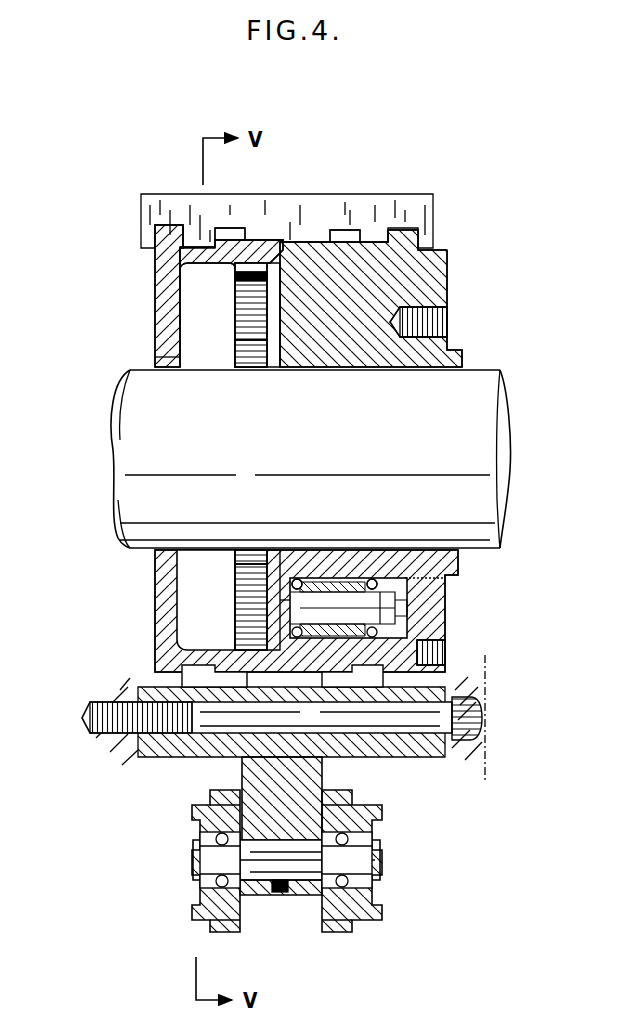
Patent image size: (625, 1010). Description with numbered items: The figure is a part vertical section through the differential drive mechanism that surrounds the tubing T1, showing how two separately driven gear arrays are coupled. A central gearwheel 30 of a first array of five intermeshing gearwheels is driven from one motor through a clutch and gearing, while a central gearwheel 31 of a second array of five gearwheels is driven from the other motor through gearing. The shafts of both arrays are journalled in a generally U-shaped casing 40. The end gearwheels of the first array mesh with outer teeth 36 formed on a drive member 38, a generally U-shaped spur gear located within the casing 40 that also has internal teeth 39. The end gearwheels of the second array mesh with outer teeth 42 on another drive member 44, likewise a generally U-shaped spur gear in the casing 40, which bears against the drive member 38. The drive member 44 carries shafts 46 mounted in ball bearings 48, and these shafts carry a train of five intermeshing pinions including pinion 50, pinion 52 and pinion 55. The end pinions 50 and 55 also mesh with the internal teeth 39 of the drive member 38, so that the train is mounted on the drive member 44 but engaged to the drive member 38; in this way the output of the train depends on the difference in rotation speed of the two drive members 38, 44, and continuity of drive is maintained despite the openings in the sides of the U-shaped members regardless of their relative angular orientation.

The tubing T1 is at (132, 442).
The central gearwheel 30 is at (228, 908).
The central gearwheel 31 is at (350, 908).
The outer teeth 36 is at (240, 235).
The drive member 38 is at (162, 255).
The internal teeth 39 is at (242, 285).
The casing 40 is at (318, 215).
The outer teeth 42 is at (358, 228).
The drive member 44 is at (438, 269).
The shafts 46 is at (378, 607).
The ball bearings 48 is at (370, 578).
The end pinion 50 is at (240, 606).
The pinion 52 is at (240, 562).
The end pinion 55 is at (240, 349).